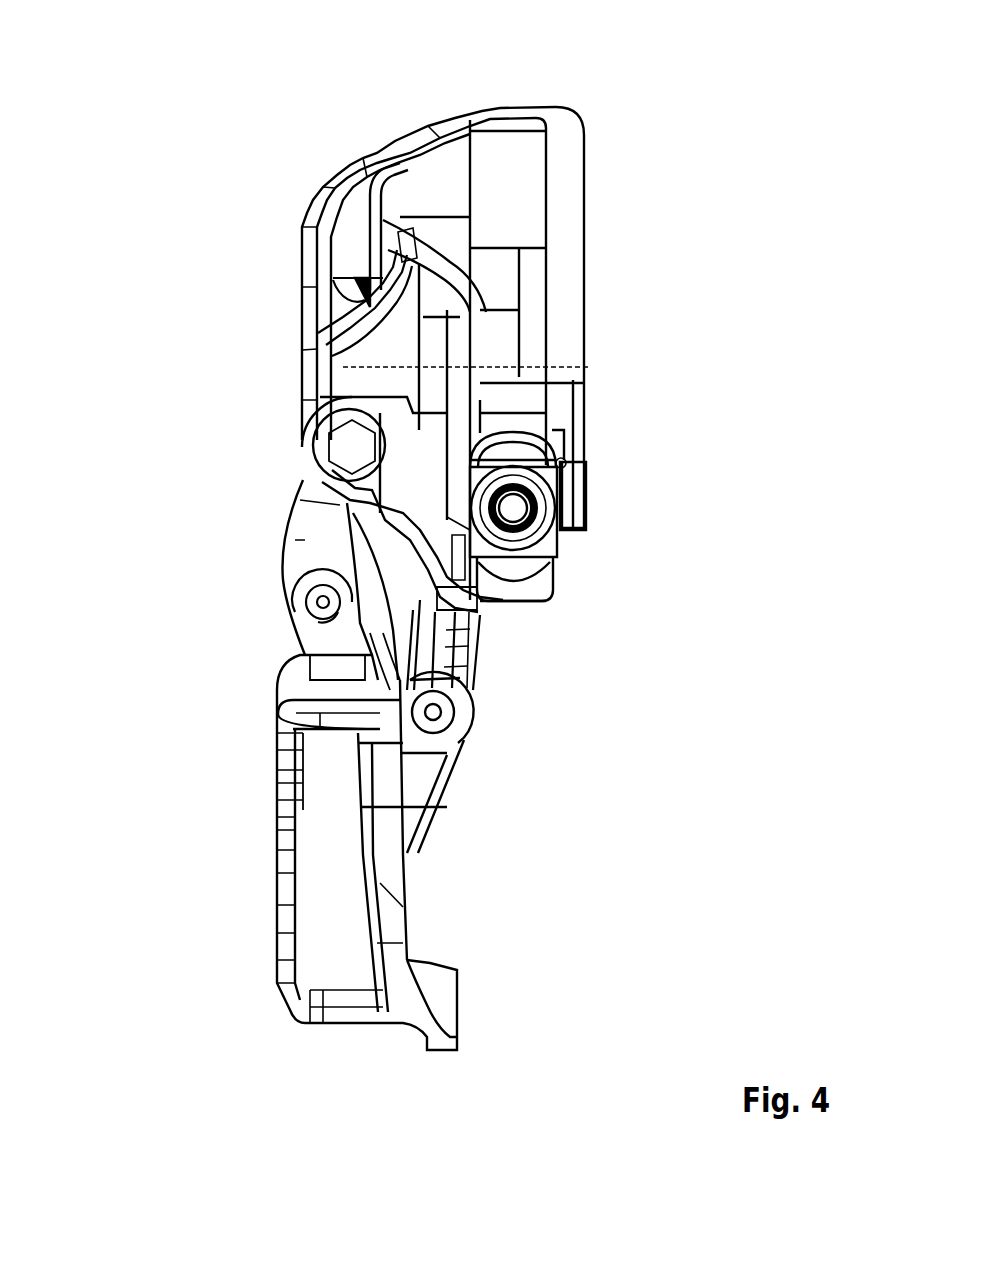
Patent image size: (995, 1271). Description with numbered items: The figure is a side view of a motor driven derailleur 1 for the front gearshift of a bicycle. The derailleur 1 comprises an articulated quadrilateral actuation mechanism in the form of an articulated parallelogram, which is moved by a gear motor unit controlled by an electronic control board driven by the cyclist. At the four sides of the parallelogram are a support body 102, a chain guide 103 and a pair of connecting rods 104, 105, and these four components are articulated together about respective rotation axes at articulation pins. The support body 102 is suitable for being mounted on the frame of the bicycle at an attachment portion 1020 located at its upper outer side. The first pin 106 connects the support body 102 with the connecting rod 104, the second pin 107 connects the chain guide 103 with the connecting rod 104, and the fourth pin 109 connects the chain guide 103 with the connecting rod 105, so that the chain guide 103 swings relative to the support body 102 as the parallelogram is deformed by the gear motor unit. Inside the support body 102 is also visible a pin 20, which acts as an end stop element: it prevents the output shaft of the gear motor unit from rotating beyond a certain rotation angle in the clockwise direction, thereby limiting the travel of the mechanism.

The derailleur 1 is at (230, 146).
The support body 102 is at (480, 111).
The attachment portion 1020 is at (589, 212).
The pin 20 is at (352, 294).
The first pin 106 is at (362, 445).
The connecting rod 104 is at (296, 524).
The second pin 107 is at (312, 615).
The connecting rod 105 is at (462, 646).
The fourth pin 109 is at (452, 725).
The chain guide 103 is at (289, 1016).